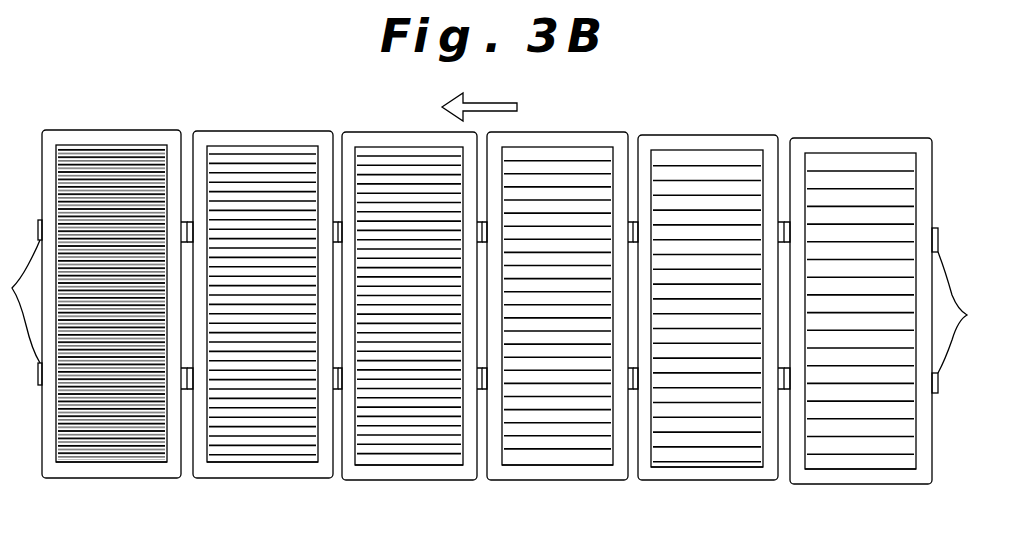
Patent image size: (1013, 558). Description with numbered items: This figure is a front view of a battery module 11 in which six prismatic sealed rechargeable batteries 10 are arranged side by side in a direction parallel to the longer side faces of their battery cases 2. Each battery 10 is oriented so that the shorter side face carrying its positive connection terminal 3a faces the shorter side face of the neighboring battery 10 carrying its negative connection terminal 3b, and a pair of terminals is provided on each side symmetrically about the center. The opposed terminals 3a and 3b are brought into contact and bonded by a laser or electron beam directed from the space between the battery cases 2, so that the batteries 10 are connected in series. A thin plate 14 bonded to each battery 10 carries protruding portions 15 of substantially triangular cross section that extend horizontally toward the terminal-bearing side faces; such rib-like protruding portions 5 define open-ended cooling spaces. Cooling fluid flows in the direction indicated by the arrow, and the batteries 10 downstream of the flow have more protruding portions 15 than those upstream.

The battery case 2 is at (90, 140).
The prismatic sealed rechargeable battery 10 is at (122, 121).
The battery module 11 is at (309, 120).
The positive connection terminal 3a is at (190, 232).
The negative connection terminal 3b is at (185, 232).
The thin plate 14 is at (150, 465).
The protruding portions 15 is at (92, 438).
The rib-like protruding portions 5 is at (10, 469).